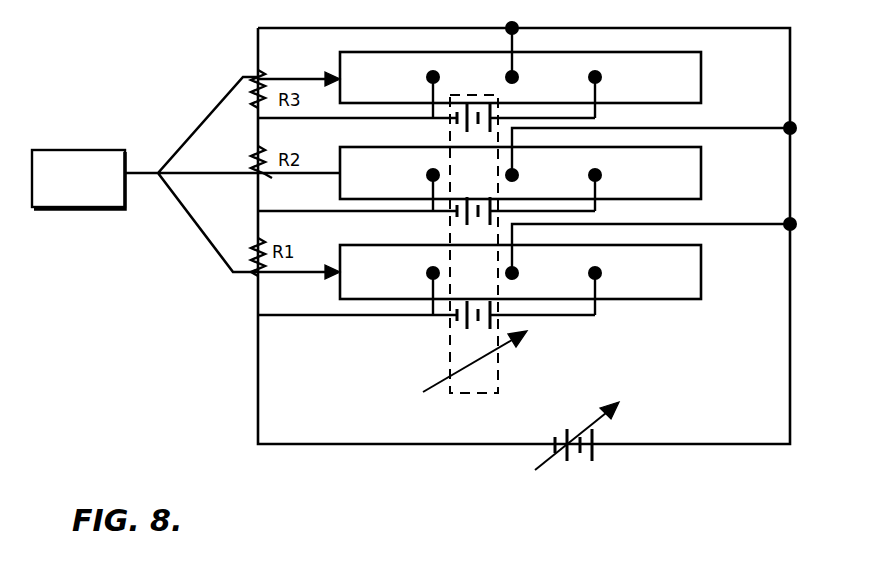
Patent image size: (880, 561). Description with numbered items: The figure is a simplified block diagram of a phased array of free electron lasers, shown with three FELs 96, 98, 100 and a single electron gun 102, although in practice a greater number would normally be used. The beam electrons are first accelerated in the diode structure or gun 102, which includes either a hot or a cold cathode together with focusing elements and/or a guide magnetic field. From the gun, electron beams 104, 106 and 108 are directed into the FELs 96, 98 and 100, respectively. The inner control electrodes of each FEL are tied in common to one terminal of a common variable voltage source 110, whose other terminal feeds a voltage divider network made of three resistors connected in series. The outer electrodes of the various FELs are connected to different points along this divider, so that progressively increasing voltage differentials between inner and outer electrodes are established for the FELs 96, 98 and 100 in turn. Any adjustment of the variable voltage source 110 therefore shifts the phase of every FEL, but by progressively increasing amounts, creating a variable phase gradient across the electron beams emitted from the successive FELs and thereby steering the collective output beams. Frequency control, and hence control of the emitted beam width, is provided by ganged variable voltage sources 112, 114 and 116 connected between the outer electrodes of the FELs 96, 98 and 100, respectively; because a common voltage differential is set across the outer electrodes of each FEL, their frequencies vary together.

The free electron laser 96 is at (702, 97).
The free electron laser 98 is at (702, 193).
The free electron laser 100 is at (702, 292).
The electron gun 102 is at (80, 150).
The electron beam 104 is at (297, 78).
The electron beam 106 is at (311, 174).
The electron beam 108 is at (313, 272).
The common variable voltage source 110 is at (571, 456).
The variable voltage source 112 is at (472, 106).
The variable voltage source 114 is at (468, 222).
The variable voltage source 116 is at (464, 319).